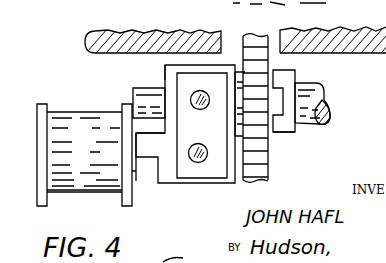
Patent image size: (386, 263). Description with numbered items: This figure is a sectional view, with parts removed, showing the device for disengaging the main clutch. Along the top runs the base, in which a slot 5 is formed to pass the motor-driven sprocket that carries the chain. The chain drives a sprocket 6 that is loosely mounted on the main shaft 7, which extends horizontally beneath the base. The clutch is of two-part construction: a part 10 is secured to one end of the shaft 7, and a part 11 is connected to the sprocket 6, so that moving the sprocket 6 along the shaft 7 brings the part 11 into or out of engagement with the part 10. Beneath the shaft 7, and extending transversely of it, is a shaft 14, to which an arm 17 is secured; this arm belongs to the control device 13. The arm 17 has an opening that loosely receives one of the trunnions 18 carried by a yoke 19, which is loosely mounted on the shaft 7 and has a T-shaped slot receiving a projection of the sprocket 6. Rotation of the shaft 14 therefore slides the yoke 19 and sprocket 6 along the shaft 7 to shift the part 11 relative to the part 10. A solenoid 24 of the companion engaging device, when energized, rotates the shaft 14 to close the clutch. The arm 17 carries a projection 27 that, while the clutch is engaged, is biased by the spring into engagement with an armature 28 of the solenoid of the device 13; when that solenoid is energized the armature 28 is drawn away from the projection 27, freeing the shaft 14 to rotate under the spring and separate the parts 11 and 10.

The slot 5 is at (236, 42).
The sprocket 6 is at (262, 167).
The main shaft 7 is at (318, 94).
The clutch part 10 is at (296, 74).
The clutch part 11 is at (273, 135).
The control device 13 is at (98, 103).
The shaft 14 is at (200, 163).
The arm 17 is at (174, 81).
The trunnions 18 is at (194, 109).
The yoke 19 is at (166, 67).
The solenoid 24 is at (77, 186).
The projection 27 is at (148, 133).
The armature 28 is at (140, 173).